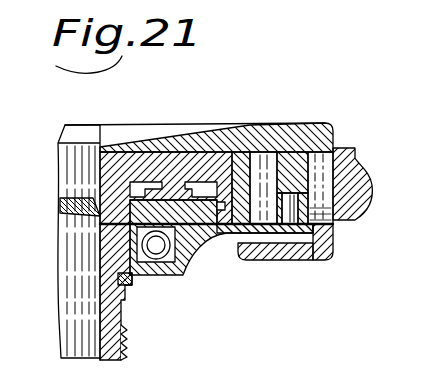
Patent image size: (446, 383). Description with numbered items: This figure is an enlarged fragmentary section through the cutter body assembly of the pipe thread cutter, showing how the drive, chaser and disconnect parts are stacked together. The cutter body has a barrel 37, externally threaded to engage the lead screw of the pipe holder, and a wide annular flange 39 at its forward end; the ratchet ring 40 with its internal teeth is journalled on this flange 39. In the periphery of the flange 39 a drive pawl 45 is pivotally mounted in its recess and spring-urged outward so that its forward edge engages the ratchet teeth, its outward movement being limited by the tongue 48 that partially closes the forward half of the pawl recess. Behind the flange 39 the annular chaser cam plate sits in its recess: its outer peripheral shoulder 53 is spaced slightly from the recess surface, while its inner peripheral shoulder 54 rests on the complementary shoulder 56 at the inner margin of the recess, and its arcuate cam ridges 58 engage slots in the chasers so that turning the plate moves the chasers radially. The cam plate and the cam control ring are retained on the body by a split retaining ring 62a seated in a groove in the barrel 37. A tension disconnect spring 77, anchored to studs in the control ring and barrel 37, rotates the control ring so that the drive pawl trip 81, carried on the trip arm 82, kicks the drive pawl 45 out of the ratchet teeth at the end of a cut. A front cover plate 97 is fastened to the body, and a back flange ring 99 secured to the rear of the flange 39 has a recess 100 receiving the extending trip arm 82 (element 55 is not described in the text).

The barrel 37 is at (126, 352).
The annular flange 39 is at (187, 163).
The ratchet ring 40 is at (350, 170).
The drive pawl 45 is at (258, 158).
The tongue 48 is at (323, 137).
The outer peripheral shoulder 53 is at (221, 211).
The inner peripheral shoulder 54 is at (113, 200).
The wall 55 is at (226, 200).
The complementary shoulder 56 is at (125, 204).
The arcuate cam ridges 58 is at (145, 190).
The split retaining ring 62a is at (120, 279).
The tension disconnect spring 77 is at (157, 258).
The drive pawl trip 81 is at (292, 213).
The trip arm 82 is at (235, 233).
The front cover plate 97 is at (295, 160).
The back flange ring 99 is at (335, 233).
The recess 100 is at (303, 262).